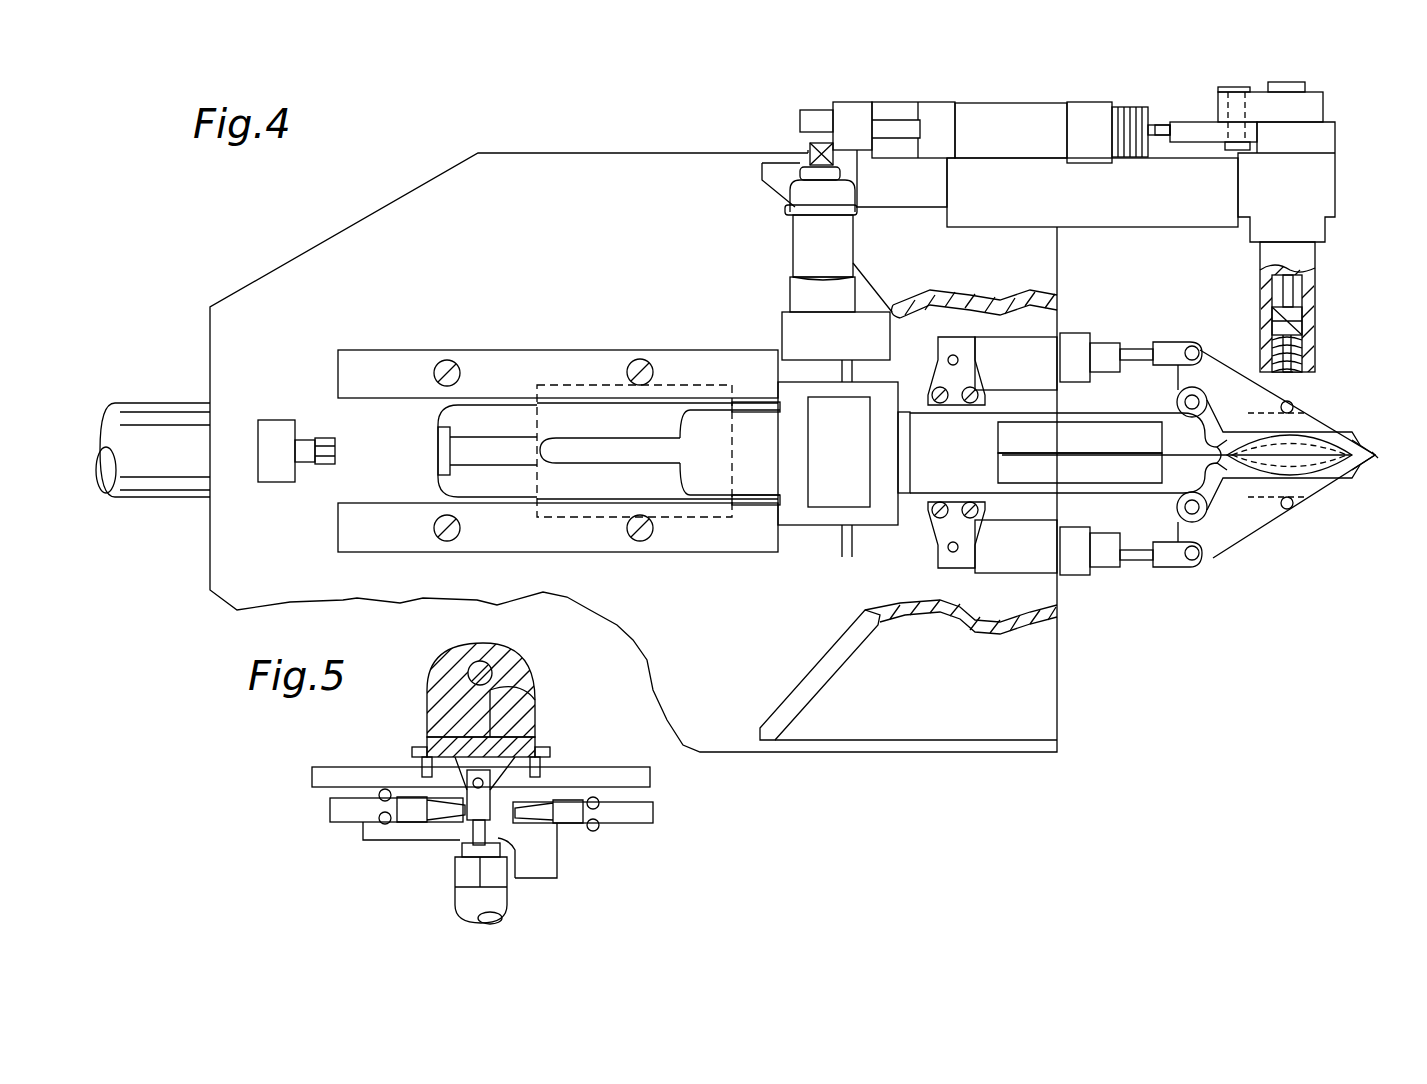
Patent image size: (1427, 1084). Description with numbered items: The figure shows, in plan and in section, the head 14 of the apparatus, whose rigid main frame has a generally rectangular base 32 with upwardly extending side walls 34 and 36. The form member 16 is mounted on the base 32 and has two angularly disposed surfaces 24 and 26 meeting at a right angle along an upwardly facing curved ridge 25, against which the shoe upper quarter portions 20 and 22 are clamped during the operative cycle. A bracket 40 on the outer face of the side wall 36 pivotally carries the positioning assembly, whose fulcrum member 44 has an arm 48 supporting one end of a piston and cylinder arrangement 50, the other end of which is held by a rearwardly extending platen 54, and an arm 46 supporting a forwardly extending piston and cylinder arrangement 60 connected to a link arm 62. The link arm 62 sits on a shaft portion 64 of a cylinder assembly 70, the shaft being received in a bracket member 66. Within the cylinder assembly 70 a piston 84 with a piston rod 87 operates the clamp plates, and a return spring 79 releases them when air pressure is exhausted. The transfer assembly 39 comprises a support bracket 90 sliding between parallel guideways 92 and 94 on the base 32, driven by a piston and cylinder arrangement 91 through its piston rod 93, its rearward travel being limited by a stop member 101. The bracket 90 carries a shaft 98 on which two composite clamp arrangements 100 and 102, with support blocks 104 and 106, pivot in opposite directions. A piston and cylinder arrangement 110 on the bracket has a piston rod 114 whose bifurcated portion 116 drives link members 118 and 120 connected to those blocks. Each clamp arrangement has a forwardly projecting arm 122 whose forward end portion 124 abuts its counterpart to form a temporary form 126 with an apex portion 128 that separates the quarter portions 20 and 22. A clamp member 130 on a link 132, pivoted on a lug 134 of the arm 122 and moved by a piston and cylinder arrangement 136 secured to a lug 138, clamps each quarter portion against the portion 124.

In FIG. 4, the head 14 is at (1082, 590).
In FIG. 4, the form member 16 is at (984, 479).
In FIG. 4, the quarter portion 20 is at (1322, 485).
In FIG. 4, the quarter portion 22 is at (1328, 435).
In FIG. 4, the surface 24 is at (1032, 478).
In FIG. 4, the curved ridge 25 is at (1000, 462).
In FIG. 4, the surface 26 is at (1030, 432).
In FIG. 4, the base 32 is at (337, 240).
In FIG. 4, the side wall 34 is at (808, 690).
In FIG. 4, the side wall 36 is at (928, 305).
In FIG. 4, the transfer assembly 39 is at (804, 536).
In FIG. 4, the bracket 40 is at (1133, 227).
In FIG. 4, the fulcrum member 44 is at (915, 200).
In FIG. 4, the arm 46 is at (908, 105).
In FIG. 4, the arm 48 is at (850, 110).
In FIG. 4, the piston and cylinder arrangement 50 is at (790, 245).
In FIG. 4, the platen 54 is at (782, 325).
In FIG. 4, the piston and cylinder arrangement 60 is at (1025, 108).
In FIG. 4, the link arm 62 is at (1305, 108).
In FIG. 4, the shaft portion 64 is at (1292, 82).
In FIG. 4, the bracket member 66 is at (1335, 185).
In FIG. 4, the cylinder assembly 70 is at (1316, 292).
In FIG. 4, the return spring 79 is at (1292, 372).
In FIG. 4, the piston 84 is at (1302, 332).
In FIG. 4, the piston rod 87 is at (1302, 358).
In FIG. 4, the support bracket 90 is at (735, 487).
In FIG. 4, the piston and cylinder arrangement 91 is at (202, 392).
In FIG. 4, the guideway 92 is at (558, 547).
In FIG. 4, the piston rod 93 is at (490, 442).
In FIG. 4, the guideway 94 is at (515, 350).
In FIG. 4, the shaft 98 is at (907, 437).
In FIG. 5, the shaft 98 is at (495, 675).
In FIG. 4, the clamp arrangement 100 is at (1256, 546).
In FIG. 4, the stop member 101 is at (320, 465).
In FIG. 4, the clamp arrangement 102 is at (1339, 410).
In FIG. 4, the support block 104 is at (840, 545).
In FIG. 5, the support block 104 is at (430, 705).
In FIG. 5, the support block 106 is at (520, 705).
In FIG. 5, the piston and cylinder arrangement 110 is at (513, 896).
In FIG. 5, the piston rod 114 is at (475, 820).
In FIG. 5, the bifurcated portion 116 is at (465, 815).
In FIG. 5, the link member 118 is at (425, 757).
In FIG. 5, the link member 120 is at (540, 757).
In FIG. 4, the arm 122 is at (1040, 390).
In FIG. 4, the forward end portion 124 is at (1250, 430).
In FIG. 4, the temporary form 126 is at (1370, 445).
In FIG. 4, the apex portion 128 is at (1376, 457).
In FIG. 4, the clamp member 130 is at (1267, 425).
In FIG. 4, the link 132 is at (1222, 360).
In FIG. 4, the lug 134 is at (1197, 345).
In FIG. 4, the piston and cylinder arrangement 136 is at (1085, 333).
In FIG. 4, the lug 138 is at (958, 360).